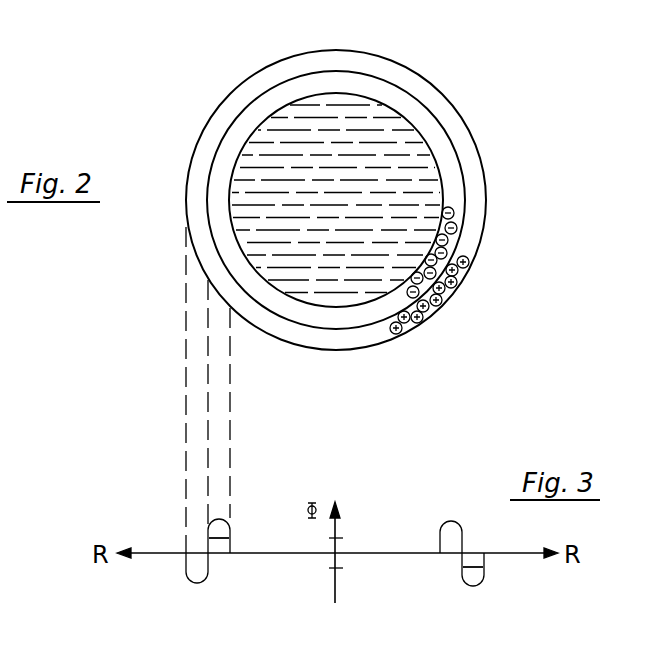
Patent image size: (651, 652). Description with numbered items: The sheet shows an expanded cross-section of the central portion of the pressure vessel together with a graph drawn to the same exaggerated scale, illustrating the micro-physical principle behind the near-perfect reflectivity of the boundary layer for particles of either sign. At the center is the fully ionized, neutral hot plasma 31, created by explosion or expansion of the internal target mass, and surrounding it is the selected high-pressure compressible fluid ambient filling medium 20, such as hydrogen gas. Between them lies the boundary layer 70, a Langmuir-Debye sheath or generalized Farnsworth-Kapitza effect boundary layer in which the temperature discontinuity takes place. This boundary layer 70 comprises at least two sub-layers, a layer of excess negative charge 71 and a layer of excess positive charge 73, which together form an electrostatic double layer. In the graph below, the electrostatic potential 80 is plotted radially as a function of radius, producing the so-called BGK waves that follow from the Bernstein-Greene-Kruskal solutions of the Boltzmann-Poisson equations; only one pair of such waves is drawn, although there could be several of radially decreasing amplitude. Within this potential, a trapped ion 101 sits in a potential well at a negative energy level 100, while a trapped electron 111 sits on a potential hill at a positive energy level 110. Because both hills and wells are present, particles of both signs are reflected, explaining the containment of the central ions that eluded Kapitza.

In FIG. 2, the high-pressure compressible fluid ambient filling medium 20 is at (467, 58).
In FIG. 2, the fully ionized neutral hot plasma 31 is at (346, 200).
In FIG. 2, the boundary layer 70 is at (475, 195).
In FIG. 2, the layer of excess negative charge 71 is at (220, 188).
In FIG. 2, the layer of excess positive charge 73 is at (452, 300).
In FIG. 3, the electrostatic potential 80 is at (461, 527).
In FIG. 3, the negative energy level 100 is at (354, 567).
In FIG. 3, the trapped ion 101 is at (485, 577).
In FIG. 3, the positive energy level 110 is at (354, 537).
In FIG. 3, the trapped electron 111 is at (230, 538).